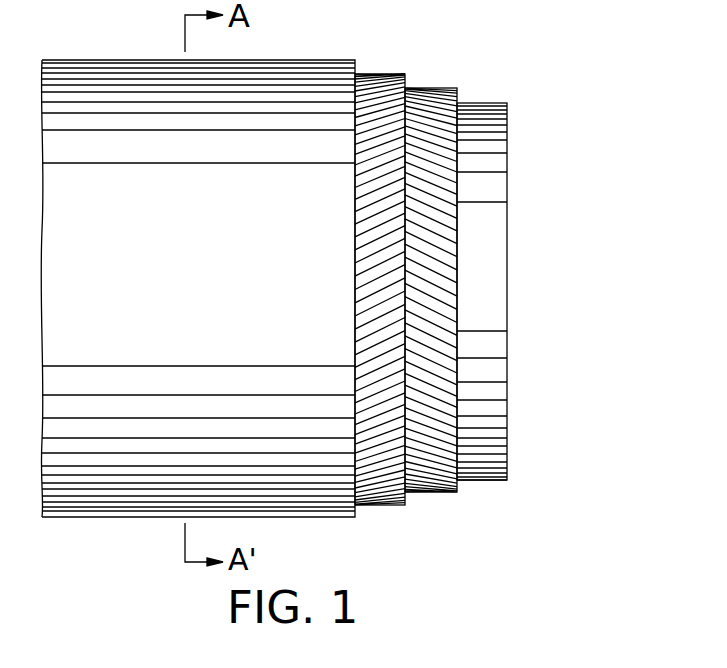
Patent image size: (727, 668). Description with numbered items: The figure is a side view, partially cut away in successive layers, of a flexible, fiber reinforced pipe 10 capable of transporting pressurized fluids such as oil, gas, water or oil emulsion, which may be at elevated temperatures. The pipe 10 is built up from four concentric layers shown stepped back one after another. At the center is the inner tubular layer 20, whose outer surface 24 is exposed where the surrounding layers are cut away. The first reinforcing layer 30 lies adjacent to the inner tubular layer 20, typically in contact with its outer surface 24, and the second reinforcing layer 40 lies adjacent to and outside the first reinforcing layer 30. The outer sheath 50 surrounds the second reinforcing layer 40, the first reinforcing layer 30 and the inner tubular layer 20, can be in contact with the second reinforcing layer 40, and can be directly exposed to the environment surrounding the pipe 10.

The flexible, fiber reinforced pipe 10 is at (356, 268).
The inner tubular layer 20 is at (507, 420).
The outer surface 24 is at (490, 481).
The first reinforcing layer 30 is at (438, 92).
The second reinforcing layer 40 is at (387, 80).
The outer sheath 50 is at (312, 75).